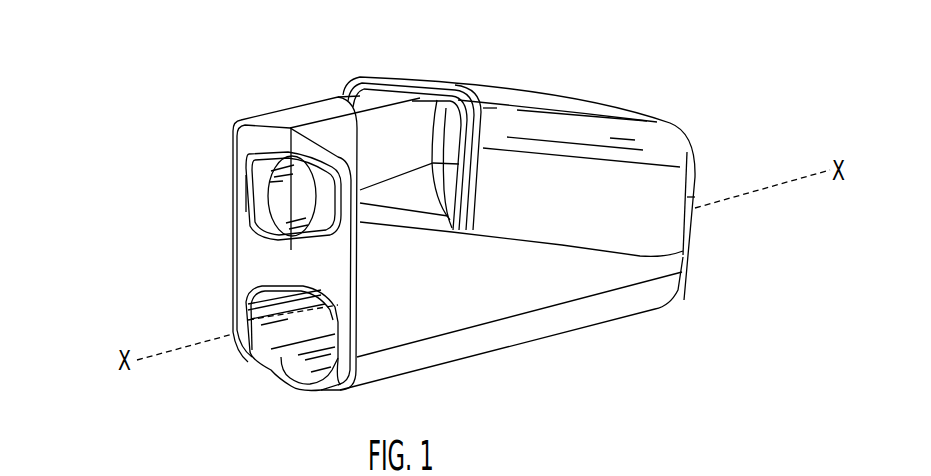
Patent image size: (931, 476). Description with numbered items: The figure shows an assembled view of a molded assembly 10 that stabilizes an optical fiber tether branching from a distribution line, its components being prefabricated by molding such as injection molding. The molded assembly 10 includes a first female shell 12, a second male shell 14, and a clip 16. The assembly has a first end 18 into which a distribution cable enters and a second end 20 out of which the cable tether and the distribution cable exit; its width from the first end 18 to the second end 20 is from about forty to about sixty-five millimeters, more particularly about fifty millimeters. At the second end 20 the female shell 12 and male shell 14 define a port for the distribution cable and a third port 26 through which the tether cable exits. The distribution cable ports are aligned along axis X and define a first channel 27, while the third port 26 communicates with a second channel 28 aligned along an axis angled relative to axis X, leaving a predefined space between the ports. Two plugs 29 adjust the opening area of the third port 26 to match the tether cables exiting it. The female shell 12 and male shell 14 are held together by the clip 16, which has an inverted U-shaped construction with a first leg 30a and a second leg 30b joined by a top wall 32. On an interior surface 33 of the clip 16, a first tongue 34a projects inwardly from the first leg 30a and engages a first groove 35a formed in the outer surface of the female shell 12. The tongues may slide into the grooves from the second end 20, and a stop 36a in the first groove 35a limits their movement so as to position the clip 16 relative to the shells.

The molded assembly 10 is at (215, 84).
The first female shell 12 is at (482, 308).
The second male shell 14 is at (247, 292).
The clip 16 is at (593, 128).
The first end 18 is at (723, 176).
The second end 20 is at (195, 200).
The third port 26 is at (340, 150).
The first channel 27 is at (288, 334).
The second channel 28 is at (298, 196).
The plugs 29 is at (249, 215).
The first leg 30a is at (603, 210).
The second leg 30b is at (343, 93).
The top wall 32 is at (533, 98).
The interior surface 33 is at (393, 97).
The first tongue 34a is at (446, 108).
The first groove 35a is at (392, 218).
The stop 36a is at (688, 250).